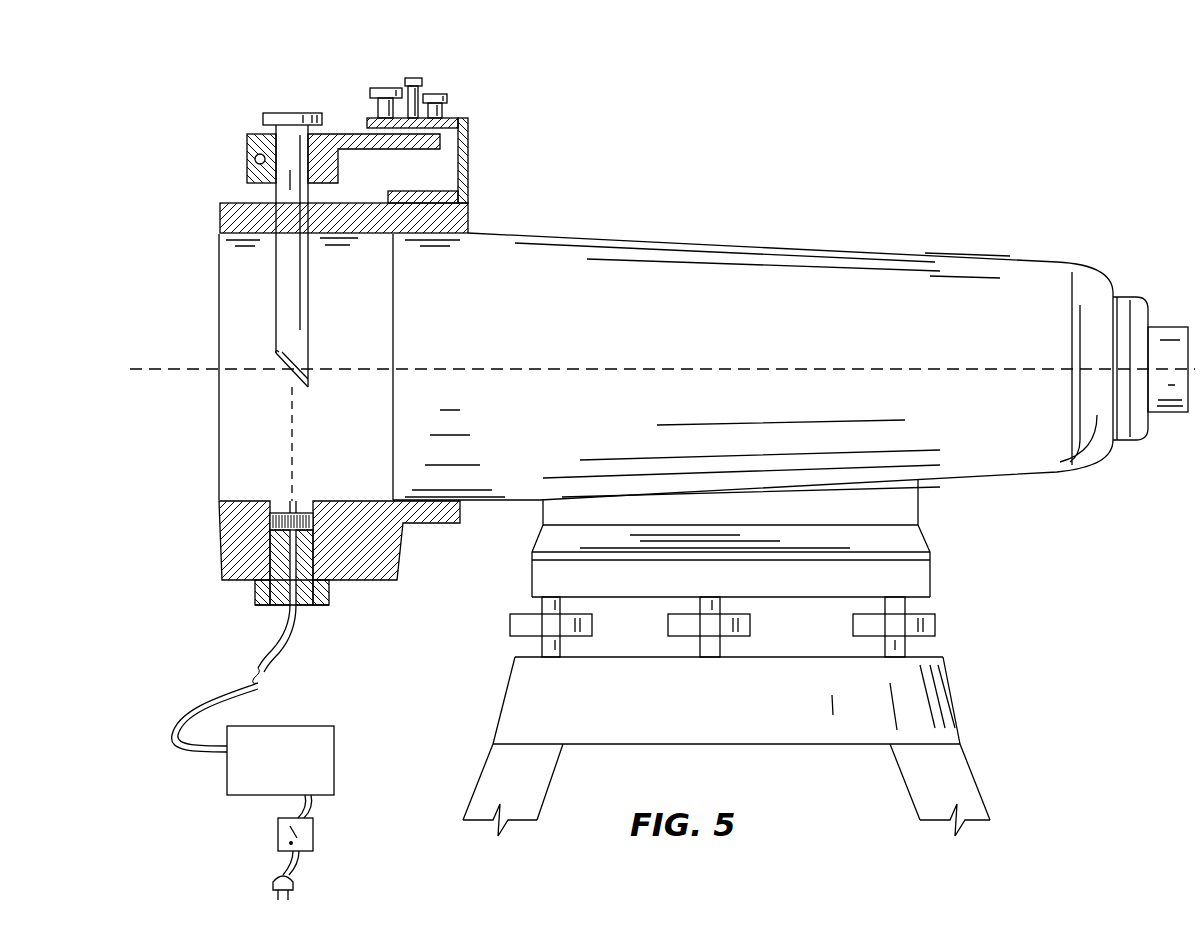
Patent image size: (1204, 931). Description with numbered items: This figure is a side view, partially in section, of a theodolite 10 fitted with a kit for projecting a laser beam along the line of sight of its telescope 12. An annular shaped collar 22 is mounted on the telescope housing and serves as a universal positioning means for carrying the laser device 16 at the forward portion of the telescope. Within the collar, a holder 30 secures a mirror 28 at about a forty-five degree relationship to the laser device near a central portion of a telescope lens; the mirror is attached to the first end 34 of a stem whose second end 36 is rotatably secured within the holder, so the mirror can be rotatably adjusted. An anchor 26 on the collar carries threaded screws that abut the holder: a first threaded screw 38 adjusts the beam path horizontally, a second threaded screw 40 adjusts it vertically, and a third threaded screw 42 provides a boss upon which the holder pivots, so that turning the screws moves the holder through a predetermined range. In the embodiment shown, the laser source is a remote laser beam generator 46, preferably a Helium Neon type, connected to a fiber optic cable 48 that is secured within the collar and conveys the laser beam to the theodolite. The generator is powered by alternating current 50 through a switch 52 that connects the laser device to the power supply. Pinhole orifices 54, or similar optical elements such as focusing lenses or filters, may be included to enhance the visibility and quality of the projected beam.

The theodolite 10 is at (928, 256).
The telescope 12 is at (1058, 272).
The laser device 16 is at (255, 592).
The annular shaped collar 22 is at (468, 218).
The anchor 26 is at (468, 128).
The mirror 28 is at (276, 352).
The holder 30 is at (247, 150).
The first end 34 is at (276, 328).
The second end 36 is at (273, 113).
The first threaded screw 38 is at (380, 90).
The second threaded screw 40 is at (437, 94).
The third threaded screw 42 is at (413, 78).
The remote laser beam generator 46 is at (312, 740).
The fiber optic cable 48 is at (268, 683).
The alternating current 50 is at (293, 885).
The switch 52 is at (313, 835).
The pinhole orifices 54 is at (270, 520).